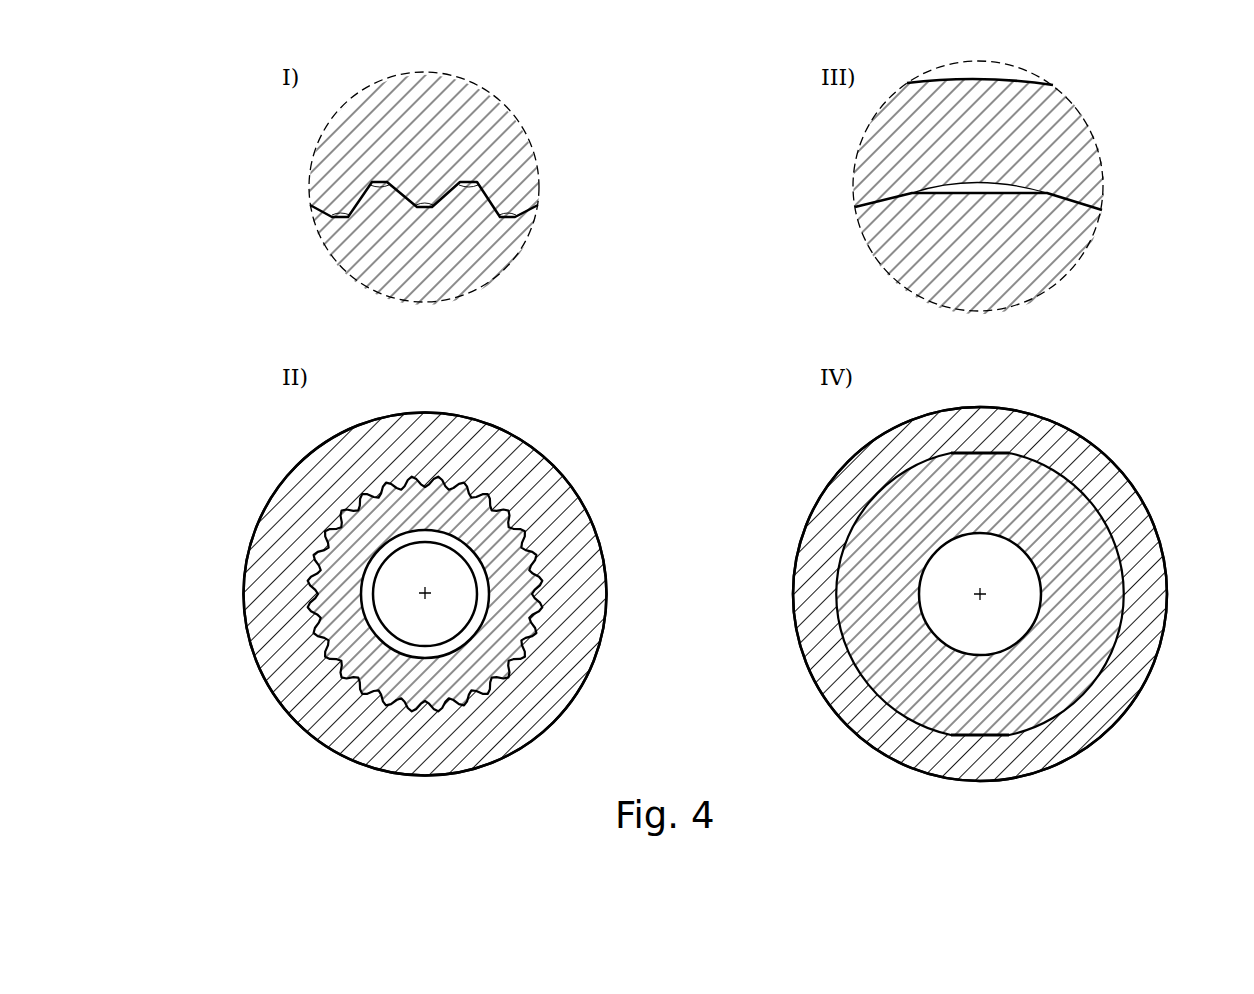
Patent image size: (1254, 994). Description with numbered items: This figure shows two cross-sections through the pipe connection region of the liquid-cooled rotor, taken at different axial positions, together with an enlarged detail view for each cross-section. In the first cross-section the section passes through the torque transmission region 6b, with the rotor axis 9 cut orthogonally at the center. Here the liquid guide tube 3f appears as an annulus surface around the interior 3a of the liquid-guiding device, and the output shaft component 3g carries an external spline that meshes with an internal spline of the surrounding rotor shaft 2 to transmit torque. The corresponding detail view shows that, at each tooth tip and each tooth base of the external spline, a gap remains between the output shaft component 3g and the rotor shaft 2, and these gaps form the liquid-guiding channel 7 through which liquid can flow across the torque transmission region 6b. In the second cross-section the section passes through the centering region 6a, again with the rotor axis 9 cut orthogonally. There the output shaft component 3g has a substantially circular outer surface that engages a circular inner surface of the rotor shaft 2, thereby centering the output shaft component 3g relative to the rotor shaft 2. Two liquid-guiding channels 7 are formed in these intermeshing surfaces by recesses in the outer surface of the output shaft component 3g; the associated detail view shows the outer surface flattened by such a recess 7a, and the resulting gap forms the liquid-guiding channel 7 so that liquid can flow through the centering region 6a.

The rotor shaft 2 is at (480, 105).
The interior of the liquid-guiding device 3a is at (960, 628).
The liquid guide tube 3f is at (367, 620).
The output shaft component 3g is at (507, 252).
The centering region 6a is at (821, 480).
The torque transmission region 6b is at (582, 488).
The liquid-guiding channel 7 is at (476, 181).
The recess for the liquid-guiding channel 7a is at (988, 191).
The rotor axis 9 is at (427, 592).